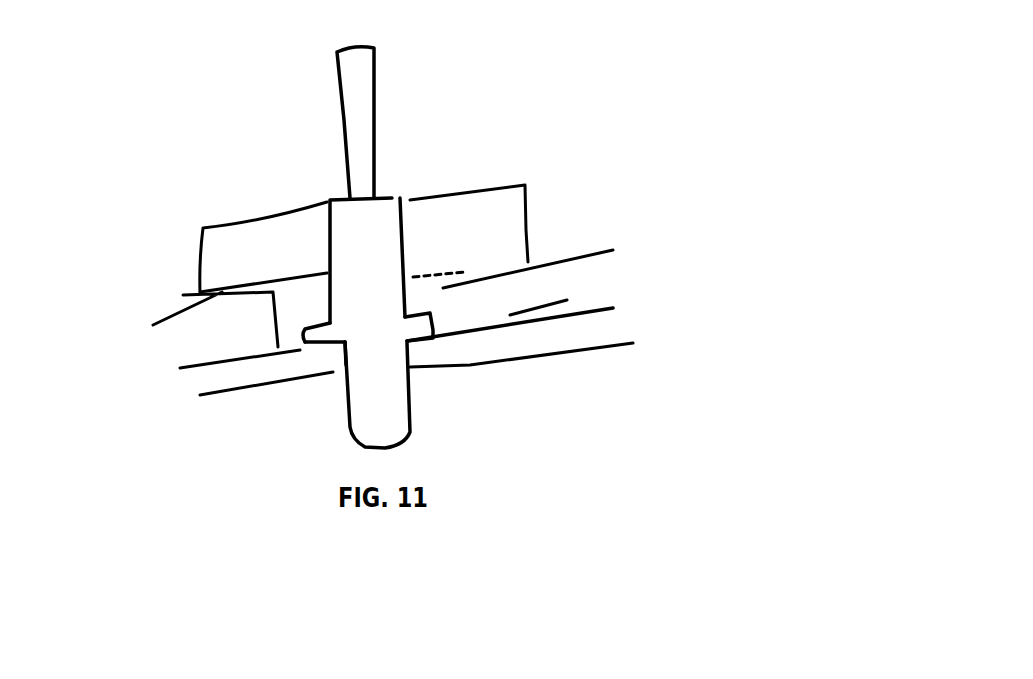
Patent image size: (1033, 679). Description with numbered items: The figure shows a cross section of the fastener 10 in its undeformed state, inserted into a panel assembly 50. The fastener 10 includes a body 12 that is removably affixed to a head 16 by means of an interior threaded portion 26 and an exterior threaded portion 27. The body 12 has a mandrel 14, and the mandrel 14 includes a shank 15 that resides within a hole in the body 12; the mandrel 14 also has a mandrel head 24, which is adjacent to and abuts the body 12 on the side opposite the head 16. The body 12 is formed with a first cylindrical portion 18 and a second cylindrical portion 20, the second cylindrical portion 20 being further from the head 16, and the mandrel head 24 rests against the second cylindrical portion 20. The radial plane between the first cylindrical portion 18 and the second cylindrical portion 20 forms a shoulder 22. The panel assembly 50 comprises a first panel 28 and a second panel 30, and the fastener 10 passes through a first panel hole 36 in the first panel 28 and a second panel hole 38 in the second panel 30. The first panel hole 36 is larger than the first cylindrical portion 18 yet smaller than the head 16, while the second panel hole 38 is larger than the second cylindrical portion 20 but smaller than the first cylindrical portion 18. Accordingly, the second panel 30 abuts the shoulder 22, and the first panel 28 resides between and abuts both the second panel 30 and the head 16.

The fastener 10 is at (482, 61).
The body 12 is at (363, 391).
The mandrel 14 is at (361, 266).
The shank 15 is at (349, 77).
The head 16 is at (441, 213).
The first cylindrical portion 18 is at (282, 326).
The second cylindrical portion 20 is at (328, 352).
The shoulder 22 is at (449, 342).
The mandrel head 24 is at (396, 437).
The interior threaded portion 26 is at (317, 214).
The exterior threaded portion 27 is at (263, 282).
The first panel 28 is at (579, 269).
The second panel 30 is at (616, 329).
The first panel hole 36 is at (452, 283).
The second panel hole 38 is at (322, 367).
The panel assembly 50 is at (737, 134).